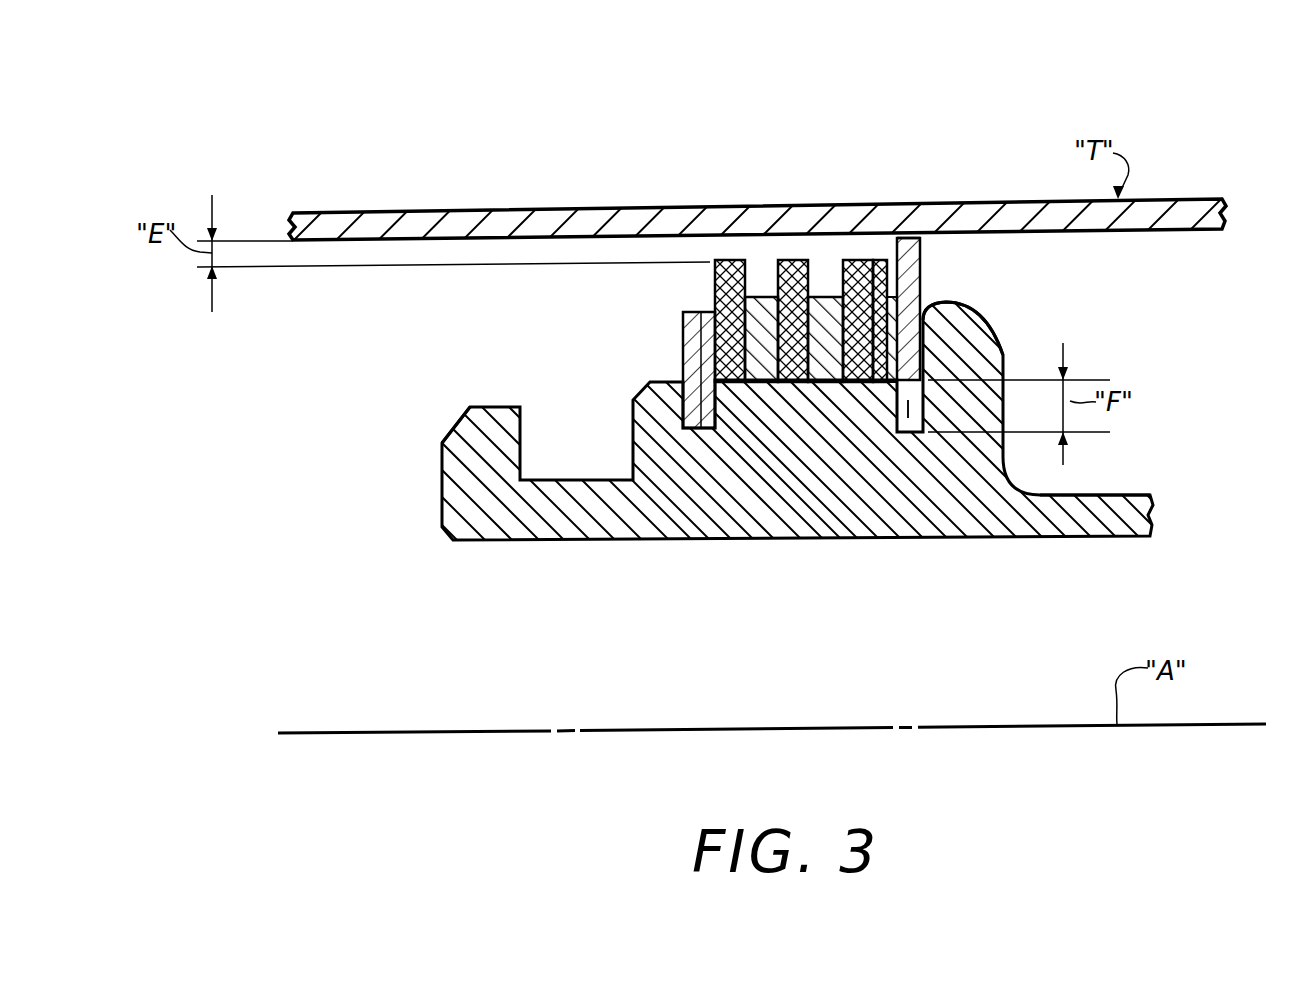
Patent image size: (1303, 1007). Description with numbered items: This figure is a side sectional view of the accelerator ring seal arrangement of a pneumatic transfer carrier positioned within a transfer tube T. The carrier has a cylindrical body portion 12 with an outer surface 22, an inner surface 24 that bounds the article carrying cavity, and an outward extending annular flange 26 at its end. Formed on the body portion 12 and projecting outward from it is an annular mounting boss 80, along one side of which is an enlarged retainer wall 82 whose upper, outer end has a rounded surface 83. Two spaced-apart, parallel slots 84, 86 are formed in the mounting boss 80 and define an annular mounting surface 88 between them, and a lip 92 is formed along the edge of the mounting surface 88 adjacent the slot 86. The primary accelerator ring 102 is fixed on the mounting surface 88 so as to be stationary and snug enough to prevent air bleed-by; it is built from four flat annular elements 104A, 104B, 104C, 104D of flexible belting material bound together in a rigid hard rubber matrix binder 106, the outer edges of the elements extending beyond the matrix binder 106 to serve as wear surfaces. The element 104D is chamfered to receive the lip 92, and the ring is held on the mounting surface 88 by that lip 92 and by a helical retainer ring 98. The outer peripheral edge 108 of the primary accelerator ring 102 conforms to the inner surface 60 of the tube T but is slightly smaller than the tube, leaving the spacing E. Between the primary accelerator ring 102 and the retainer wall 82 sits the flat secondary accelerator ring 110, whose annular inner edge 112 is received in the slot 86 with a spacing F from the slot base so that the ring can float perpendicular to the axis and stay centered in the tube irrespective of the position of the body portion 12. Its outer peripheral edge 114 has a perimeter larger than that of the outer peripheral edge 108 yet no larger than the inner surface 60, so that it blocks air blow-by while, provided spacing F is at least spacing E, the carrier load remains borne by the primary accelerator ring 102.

The cylindrical body portion 12 is at (1118, 470).
The outer surface 22 is at (1150, 495).
The inner surface 24 is at (1020, 540).
The annular flange 26 is at (482, 407).
The inner surface of tube 60 is at (1173, 230).
The annular mounting boss 80 is at (628, 370).
The retainer wall 82 is at (990, 322).
The rounded surface 83 is at (930, 312).
The slot 84 is at (700, 430).
The slot 86 is at (920, 432).
The annular mounting surface 88 is at (757, 382).
The lip 92 is at (883, 382).
The helical retainer ring 98 is at (686, 320).
The primary accelerator ring 102 is at (698, 214).
The annular element 104A is at (722, 260).
The annular element 104B is at (798, 260).
The annular element 104C is at (855, 260).
The annular element 104D is at (817, 248).
The matrix binder 106 is at (760, 297).
The outer peripheral edge 108 is at (817, 382).
The secondary accelerator ring 110 is at (922, 262).
The annular inner edge 112 is at (911, 432).
The outer peripheral edge 114 is at (915, 240).